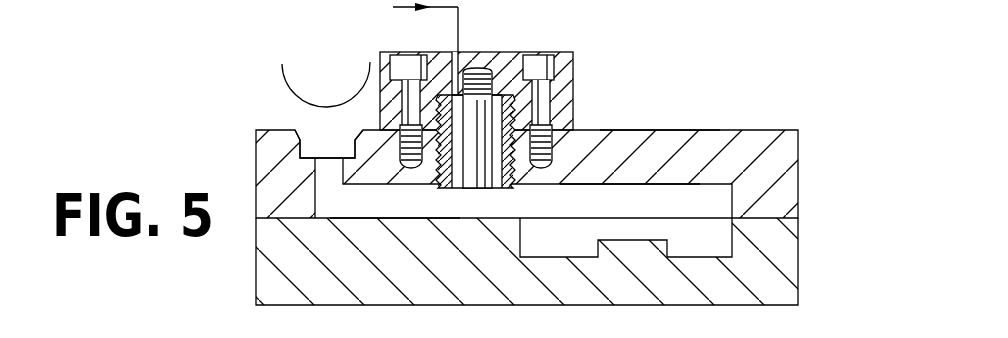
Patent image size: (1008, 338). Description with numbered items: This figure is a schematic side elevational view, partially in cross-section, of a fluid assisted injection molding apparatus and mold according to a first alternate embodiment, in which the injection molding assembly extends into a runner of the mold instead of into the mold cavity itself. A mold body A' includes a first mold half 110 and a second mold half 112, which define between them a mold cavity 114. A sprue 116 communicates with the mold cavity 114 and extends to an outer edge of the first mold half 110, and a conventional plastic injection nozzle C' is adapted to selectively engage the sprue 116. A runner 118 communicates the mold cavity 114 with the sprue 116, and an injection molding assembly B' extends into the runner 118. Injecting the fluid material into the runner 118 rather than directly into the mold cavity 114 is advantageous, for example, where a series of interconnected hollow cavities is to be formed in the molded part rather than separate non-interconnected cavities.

The first mold half 110 is at (783, 155).
The second mold half 112 is at (783, 258).
The mold cavity 114 is at (626, 188).
The sprue 116 is at (308, 144).
The runner 118 is at (401, 206).
The mold body A' is at (700, 90).
The injection molding assembly B' is at (522, 95).
The plastic injection nozzle C' is at (276, 77).